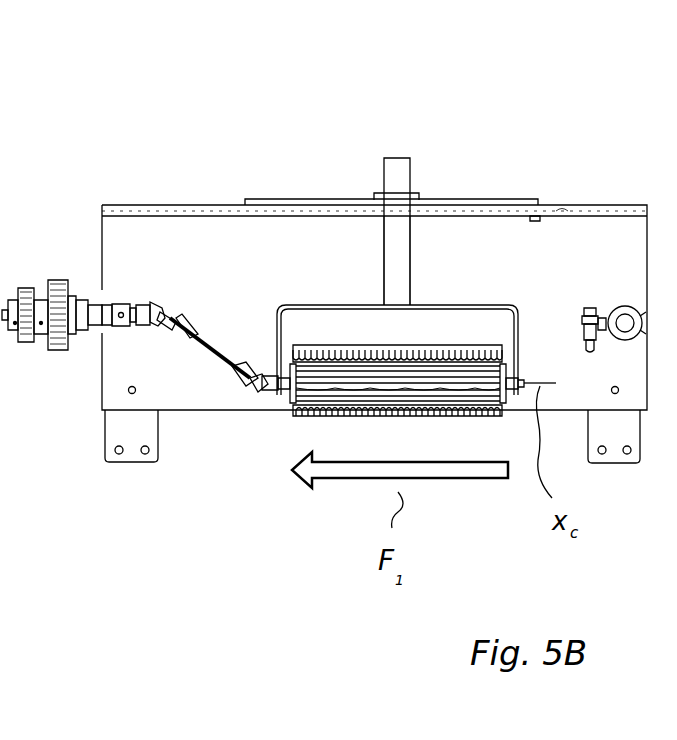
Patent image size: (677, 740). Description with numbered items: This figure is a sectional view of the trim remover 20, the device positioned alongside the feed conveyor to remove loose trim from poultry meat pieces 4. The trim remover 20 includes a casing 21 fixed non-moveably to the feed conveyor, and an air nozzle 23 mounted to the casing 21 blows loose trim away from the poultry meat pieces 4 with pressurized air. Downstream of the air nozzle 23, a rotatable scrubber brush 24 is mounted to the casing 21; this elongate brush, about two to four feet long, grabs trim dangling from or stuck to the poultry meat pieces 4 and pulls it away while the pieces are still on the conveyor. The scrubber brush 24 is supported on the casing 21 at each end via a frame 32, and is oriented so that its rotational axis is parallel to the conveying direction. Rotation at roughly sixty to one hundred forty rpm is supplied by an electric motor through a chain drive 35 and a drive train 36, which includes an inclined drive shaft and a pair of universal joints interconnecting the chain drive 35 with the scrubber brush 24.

The poultry meat piece 4 is at (10, 135).
The trim remover 20 is at (590, 182).
The casing 21 is at (206, 205).
The air nozzle 23 is at (586, 302).
The scrubber brush 24 is at (354, 350).
The frame 32 is at (442, 298).
The chain drive 35 is at (28, 343).
The drive train 36 is at (150, 297).